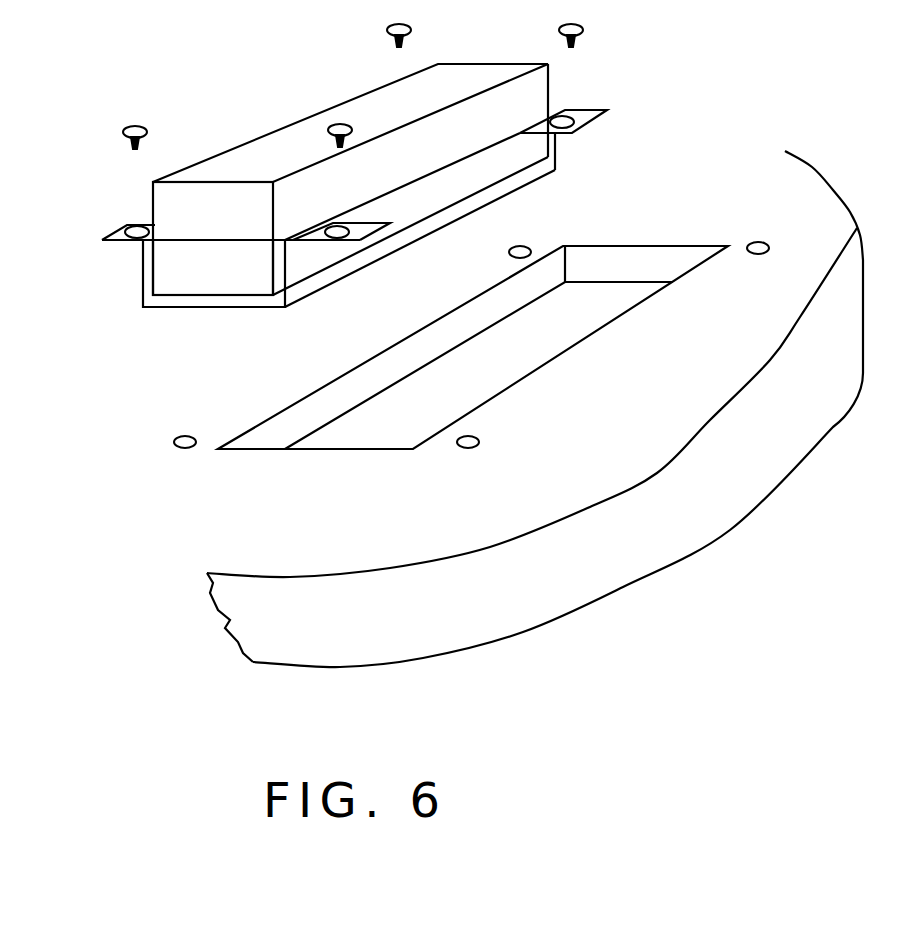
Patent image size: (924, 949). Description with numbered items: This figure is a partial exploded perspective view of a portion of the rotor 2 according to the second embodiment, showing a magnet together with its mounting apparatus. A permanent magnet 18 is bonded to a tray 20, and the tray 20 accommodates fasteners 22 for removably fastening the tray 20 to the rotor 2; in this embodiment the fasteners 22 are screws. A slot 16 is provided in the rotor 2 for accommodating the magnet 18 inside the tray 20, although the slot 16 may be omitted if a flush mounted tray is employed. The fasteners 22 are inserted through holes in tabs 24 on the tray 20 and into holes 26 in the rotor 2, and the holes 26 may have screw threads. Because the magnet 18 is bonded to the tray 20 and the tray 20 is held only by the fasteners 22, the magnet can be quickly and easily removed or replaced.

The rotor 2 is at (755, 358).
The slot 16 is at (325, 386).
The permanent magnet 18 is at (295, 140).
The tray 20 is at (142, 290).
The fasteners 22 is at (122, 132).
The tabs 24 is at (102, 239).
The holes 26 is at (172, 441).